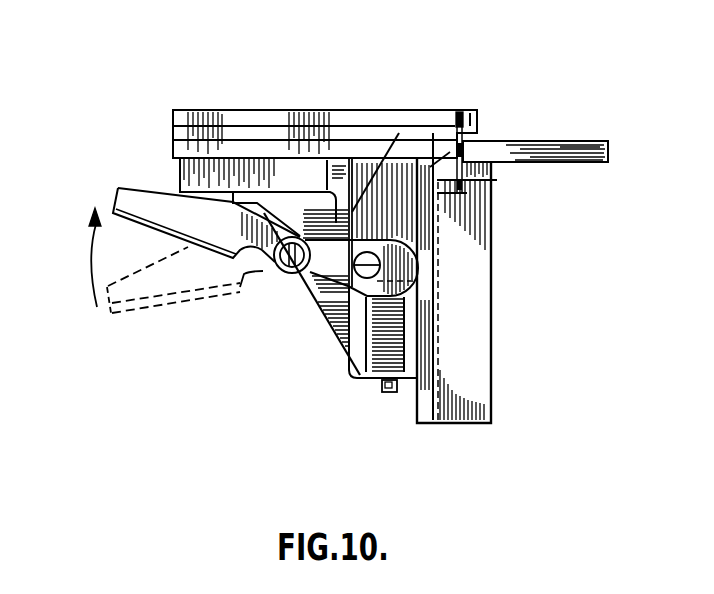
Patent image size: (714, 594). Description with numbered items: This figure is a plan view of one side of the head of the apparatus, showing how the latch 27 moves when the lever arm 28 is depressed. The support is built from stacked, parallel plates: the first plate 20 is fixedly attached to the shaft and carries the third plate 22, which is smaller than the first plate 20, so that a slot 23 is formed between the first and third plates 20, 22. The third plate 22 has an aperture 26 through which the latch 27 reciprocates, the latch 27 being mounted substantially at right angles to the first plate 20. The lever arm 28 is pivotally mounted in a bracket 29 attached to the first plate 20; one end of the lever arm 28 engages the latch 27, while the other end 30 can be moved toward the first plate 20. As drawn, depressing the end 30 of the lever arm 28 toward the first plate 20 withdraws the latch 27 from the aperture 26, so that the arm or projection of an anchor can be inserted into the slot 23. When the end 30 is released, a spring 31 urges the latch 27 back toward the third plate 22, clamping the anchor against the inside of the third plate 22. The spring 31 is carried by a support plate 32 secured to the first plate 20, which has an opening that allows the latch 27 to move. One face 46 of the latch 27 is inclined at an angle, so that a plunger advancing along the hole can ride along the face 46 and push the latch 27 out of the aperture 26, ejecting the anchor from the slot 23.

The first plate 20 is at (183, 152).
The third plate 22 is at (240, 110).
The slot 23 is at (185, 132).
The aperture 26 is at (460, 112).
The latch 27 is at (497, 180).
The lever arm 28 is at (210, 227).
The bracket 29 is at (317, 303).
The end of the lever arm 30 is at (113, 196).
The spring 31 is at (360, 380).
The support plate 32 is at (478, 370).
The face of the latch 46 is at (399, 133).